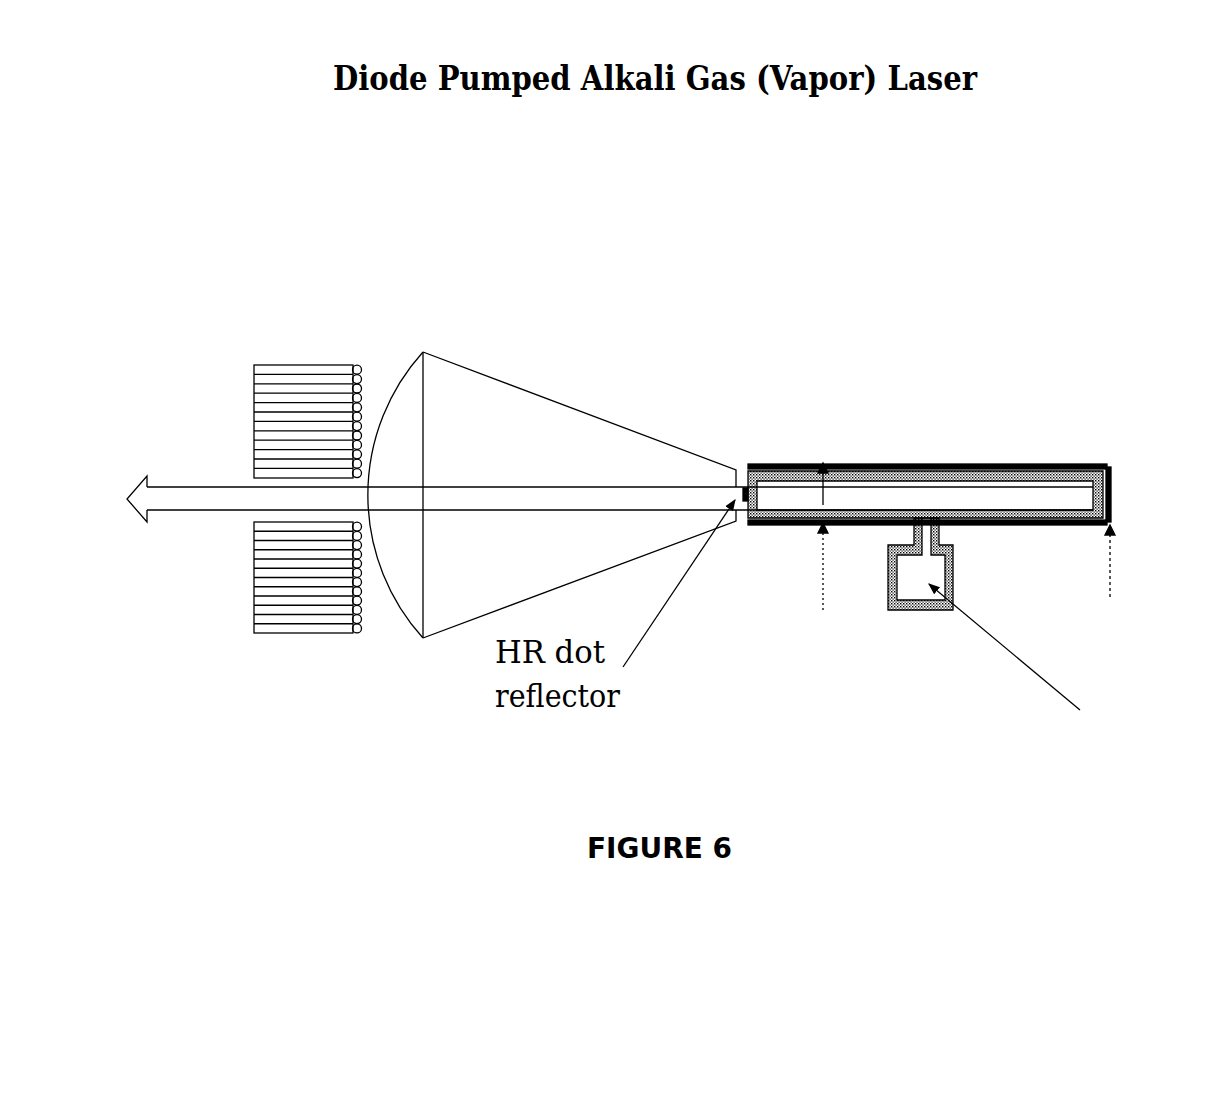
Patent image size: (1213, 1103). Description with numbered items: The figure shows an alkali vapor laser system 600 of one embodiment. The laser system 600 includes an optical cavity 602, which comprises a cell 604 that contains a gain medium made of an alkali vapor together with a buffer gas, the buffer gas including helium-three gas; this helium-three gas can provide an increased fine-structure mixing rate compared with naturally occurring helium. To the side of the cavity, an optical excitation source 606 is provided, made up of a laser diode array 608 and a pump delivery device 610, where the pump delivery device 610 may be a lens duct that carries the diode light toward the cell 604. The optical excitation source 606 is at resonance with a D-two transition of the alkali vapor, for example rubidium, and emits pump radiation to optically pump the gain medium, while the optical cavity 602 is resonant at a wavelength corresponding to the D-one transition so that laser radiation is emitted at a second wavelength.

The alkali vapor laser system 600 is at (1142, 118).
The optical cavity 602 is at (916, 406).
The cell 604 is at (1040, 469).
The optical excitation source 606 is at (412, 306).
The laser diode array 608 is at (224, 373).
The pump delivery device 610 is at (588, 389).